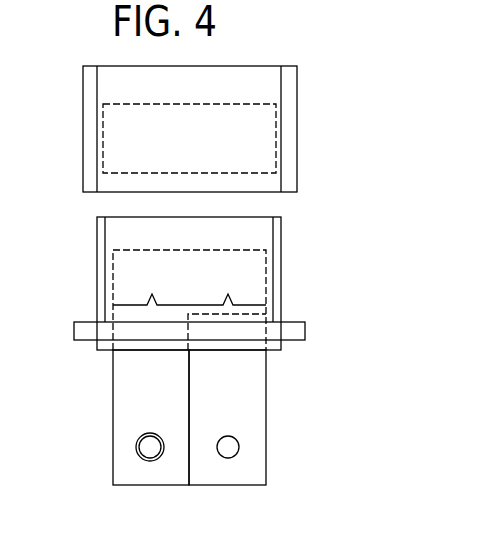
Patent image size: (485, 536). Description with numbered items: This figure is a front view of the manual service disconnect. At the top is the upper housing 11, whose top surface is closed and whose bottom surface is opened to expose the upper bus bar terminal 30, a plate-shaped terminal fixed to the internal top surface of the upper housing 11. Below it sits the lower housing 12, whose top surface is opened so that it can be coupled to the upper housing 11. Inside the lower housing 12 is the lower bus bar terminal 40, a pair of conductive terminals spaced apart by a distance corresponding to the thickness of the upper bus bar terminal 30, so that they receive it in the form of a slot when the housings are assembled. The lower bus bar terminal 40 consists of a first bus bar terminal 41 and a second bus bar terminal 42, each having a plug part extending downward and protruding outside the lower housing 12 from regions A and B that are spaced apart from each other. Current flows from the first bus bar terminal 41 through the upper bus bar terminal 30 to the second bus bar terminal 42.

The upper housing 11 is at (297, 83).
The upper bus bar terminal 30 is at (262, 141).
The lower housing 12 is at (281, 236).
The lower bus bar terminal 40 is at (260, 284).
The first bus bar terminal 41 is at (121, 427).
The second bus bar terminal 42 is at (261, 427).